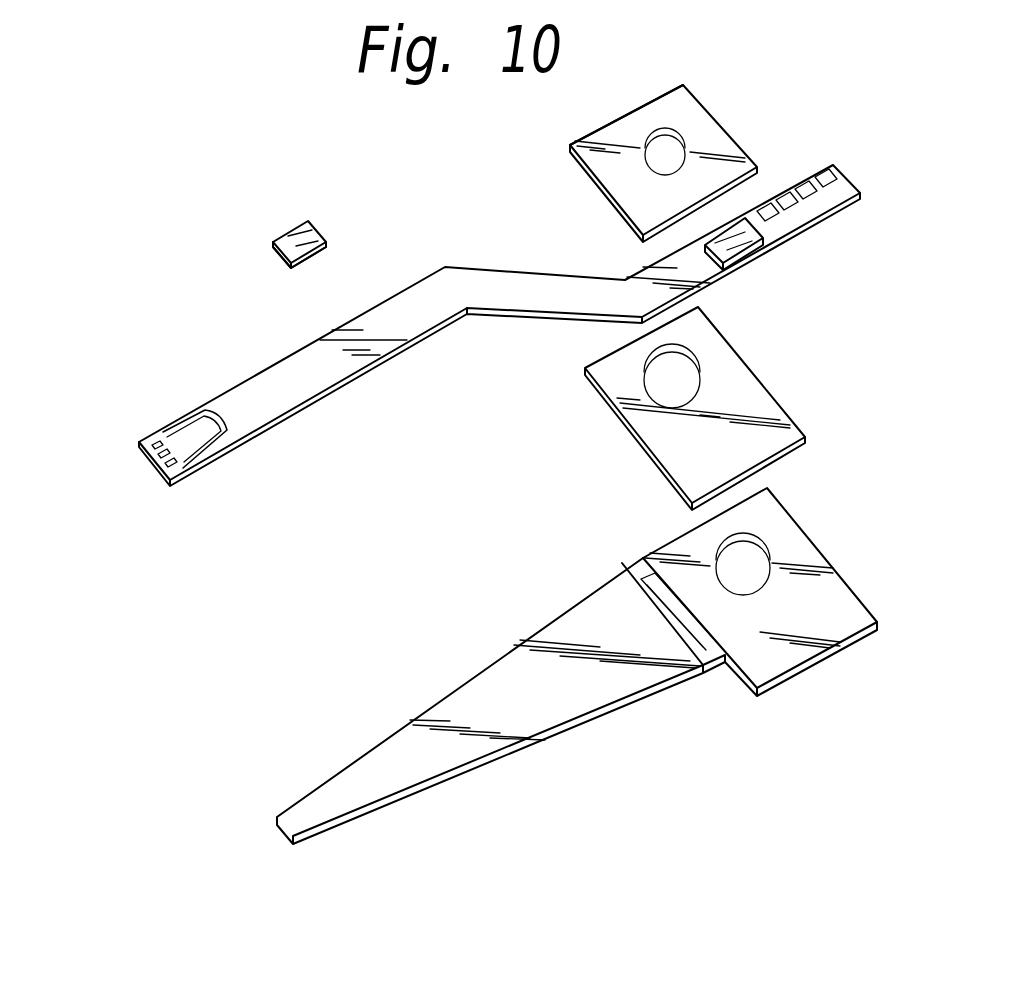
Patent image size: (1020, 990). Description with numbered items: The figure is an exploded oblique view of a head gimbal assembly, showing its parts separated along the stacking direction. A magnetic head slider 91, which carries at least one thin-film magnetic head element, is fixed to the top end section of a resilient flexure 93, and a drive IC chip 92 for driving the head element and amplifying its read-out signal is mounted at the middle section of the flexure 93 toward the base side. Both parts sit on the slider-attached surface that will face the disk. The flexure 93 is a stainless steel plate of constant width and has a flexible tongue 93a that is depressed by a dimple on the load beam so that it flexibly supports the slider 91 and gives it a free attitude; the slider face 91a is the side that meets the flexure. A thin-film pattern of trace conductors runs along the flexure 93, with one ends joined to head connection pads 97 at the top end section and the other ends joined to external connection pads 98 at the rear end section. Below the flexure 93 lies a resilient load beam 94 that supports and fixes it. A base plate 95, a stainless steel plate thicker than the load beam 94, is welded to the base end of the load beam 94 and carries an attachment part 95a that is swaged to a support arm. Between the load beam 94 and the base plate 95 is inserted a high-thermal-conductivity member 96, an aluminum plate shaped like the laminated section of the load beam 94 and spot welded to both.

The magnetic head slider 91 is at (288, 237).
The lower surface of block 91a is at (285, 256).
The drive IC chip 92 is at (728, 248).
The flexure 93 is at (460, 288).
The flexible tongue 93a is at (187, 438).
The load beam 94 is at (614, 680).
The base plate 95 is at (698, 140).
The attachment part 95a is at (566, 152).
The high-thermal-conductivity member 96 is at (752, 397).
The head connection pads 97 is at (158, 470).
The external connection pads 98 is at (828, 175).